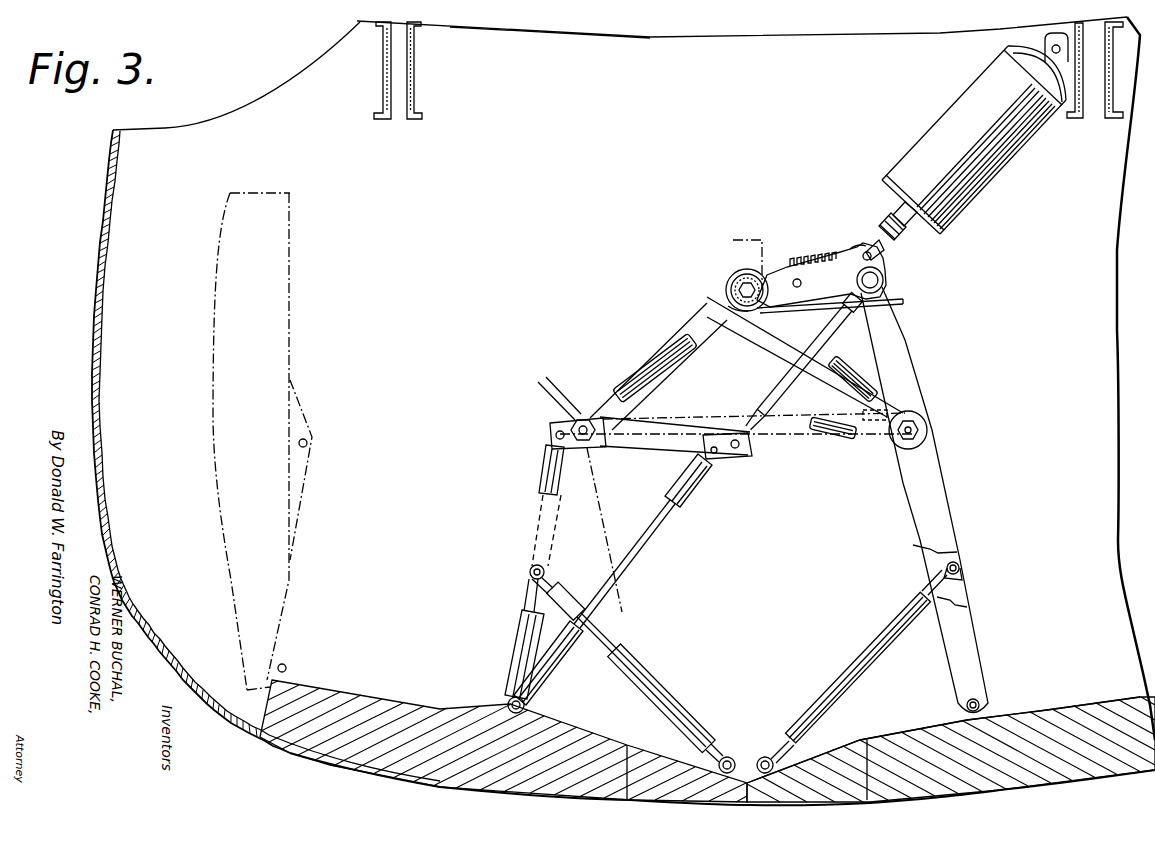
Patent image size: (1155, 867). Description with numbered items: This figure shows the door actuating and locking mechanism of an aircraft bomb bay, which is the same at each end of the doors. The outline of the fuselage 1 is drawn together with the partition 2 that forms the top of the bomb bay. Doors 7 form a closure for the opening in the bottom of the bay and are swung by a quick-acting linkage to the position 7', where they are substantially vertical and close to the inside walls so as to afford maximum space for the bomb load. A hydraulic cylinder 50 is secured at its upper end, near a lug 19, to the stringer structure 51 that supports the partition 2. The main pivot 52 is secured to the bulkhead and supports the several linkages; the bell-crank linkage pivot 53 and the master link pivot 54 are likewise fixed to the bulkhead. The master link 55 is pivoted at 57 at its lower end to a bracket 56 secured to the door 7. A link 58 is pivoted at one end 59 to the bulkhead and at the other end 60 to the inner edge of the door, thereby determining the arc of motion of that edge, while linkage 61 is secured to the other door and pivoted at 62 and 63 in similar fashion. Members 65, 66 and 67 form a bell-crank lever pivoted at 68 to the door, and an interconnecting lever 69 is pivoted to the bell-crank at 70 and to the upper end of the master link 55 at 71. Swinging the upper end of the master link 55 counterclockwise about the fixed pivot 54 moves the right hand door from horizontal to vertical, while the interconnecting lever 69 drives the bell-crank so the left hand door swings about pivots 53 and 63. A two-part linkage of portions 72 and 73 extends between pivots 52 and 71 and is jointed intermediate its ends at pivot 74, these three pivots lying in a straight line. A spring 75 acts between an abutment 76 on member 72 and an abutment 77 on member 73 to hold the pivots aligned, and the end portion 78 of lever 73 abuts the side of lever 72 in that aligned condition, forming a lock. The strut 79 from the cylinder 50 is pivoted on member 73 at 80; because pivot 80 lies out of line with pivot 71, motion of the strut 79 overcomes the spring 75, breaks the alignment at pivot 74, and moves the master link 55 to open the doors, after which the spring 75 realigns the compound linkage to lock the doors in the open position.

The fuselage 1 is at (97, 289).
The partition 2 is at (847, 35).
The doors 7 is at (707, 729).
The open door position 7' is at (268, 441).
The mounting lug of cylinder 19 is at (1056, 48).
The hydraulic cylinder 50 is at (962, 178).
The stringer structure 51 is at (1092, 95).
The main pivot 52 is at (740, 290).
The bell-crank linkage pivot 53 is at (583, 420).
The master link pivot 54 is at (930, 430).
The master link 55 is at (892, 351).
The bracket 56 is at (1017, 708).
The master link lower pivot 57 is at (978, 700).
The link 58 is at (862, 658).
The link pivot 59 is at (960, 570).
The link pivot 60 is at (762, 756).
The linkage 61 is at (632, 653).
The linkage pivot 62 is at (731, 756).
The linkage pivot 63 is at (530, 572).
The bell-crank lever member 65 is at (547, 462).
The bell-crank lever member 66 is at (660, 445).
The bell-crank lever member 67 is at (687, 498).
The bell-crank lever pivot 68 is at (507, 700).
The interconnecting lever 69 is at (775, 392).
The interconnecting lever pivot 70 is at (738, 449).
The master link upper pivot 71 is at (848, 250).
The linkage portion 72 is at (763, 272).
The linkage portion 73 is at (872, 296).
The intermediate pivot 74 is at (795, 288).
The spring 75 is at (803, 259).
The abutment 76 is at (790, 264).
The abutment 77 is at (884, 280).
The end portion 78 is at (727, 322).
The strut 79 is at (886, 247).
The strut pivot 80 is at (872, 256).